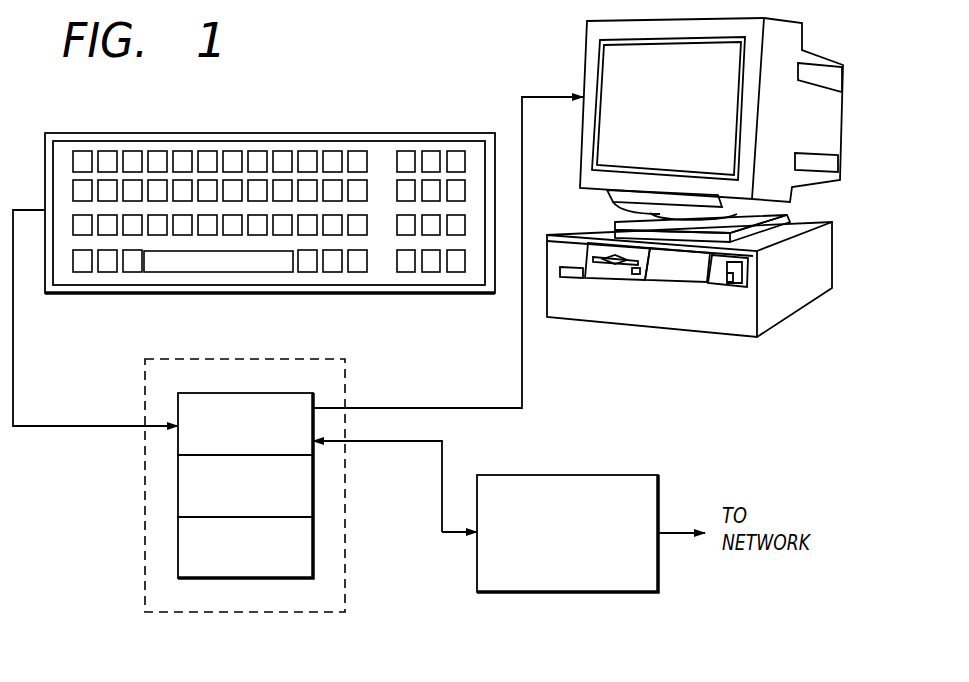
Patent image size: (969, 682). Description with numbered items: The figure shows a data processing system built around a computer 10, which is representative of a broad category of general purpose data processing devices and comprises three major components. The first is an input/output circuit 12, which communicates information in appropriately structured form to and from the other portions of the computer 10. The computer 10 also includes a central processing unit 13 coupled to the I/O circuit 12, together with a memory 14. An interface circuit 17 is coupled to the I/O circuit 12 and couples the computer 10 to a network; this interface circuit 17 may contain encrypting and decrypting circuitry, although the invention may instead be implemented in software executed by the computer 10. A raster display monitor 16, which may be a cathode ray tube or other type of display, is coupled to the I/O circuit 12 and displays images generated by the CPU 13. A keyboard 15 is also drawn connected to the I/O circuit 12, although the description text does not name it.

The computer system 10 is at (300, 359).
The I/O unit 12 is at (215, 393).
The CPU 13 is at (313, 494).
The memory 14 is at (313, 550).
The keyboard 15 is at (346, 133).
The display monitor and computer 16 is at (583, 54).
The interface circuit 17 is at (565, 475).